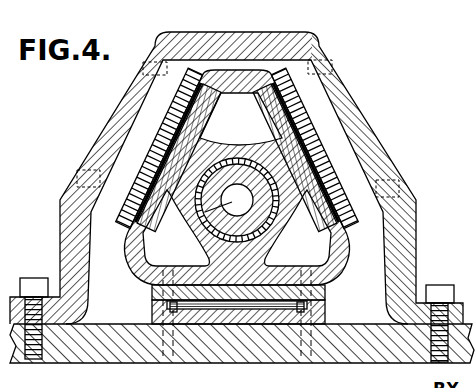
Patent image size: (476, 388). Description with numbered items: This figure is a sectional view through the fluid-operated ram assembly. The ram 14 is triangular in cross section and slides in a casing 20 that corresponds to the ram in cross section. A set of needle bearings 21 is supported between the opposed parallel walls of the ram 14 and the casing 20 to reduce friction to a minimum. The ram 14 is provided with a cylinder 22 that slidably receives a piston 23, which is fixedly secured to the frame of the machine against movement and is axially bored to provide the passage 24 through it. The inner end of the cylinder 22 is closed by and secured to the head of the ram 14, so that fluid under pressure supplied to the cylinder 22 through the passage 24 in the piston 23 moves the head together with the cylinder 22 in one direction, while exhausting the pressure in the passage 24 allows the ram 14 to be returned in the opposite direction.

The ram 14 is at (341, 272).
The casing 20 is at (373, 133).
The set of needle bearings 21 is at (148, 147).
The cylinder 22 is at (229, 158).
The piston 23 is at (242, 170).
The passage 24 is at (176, 228).